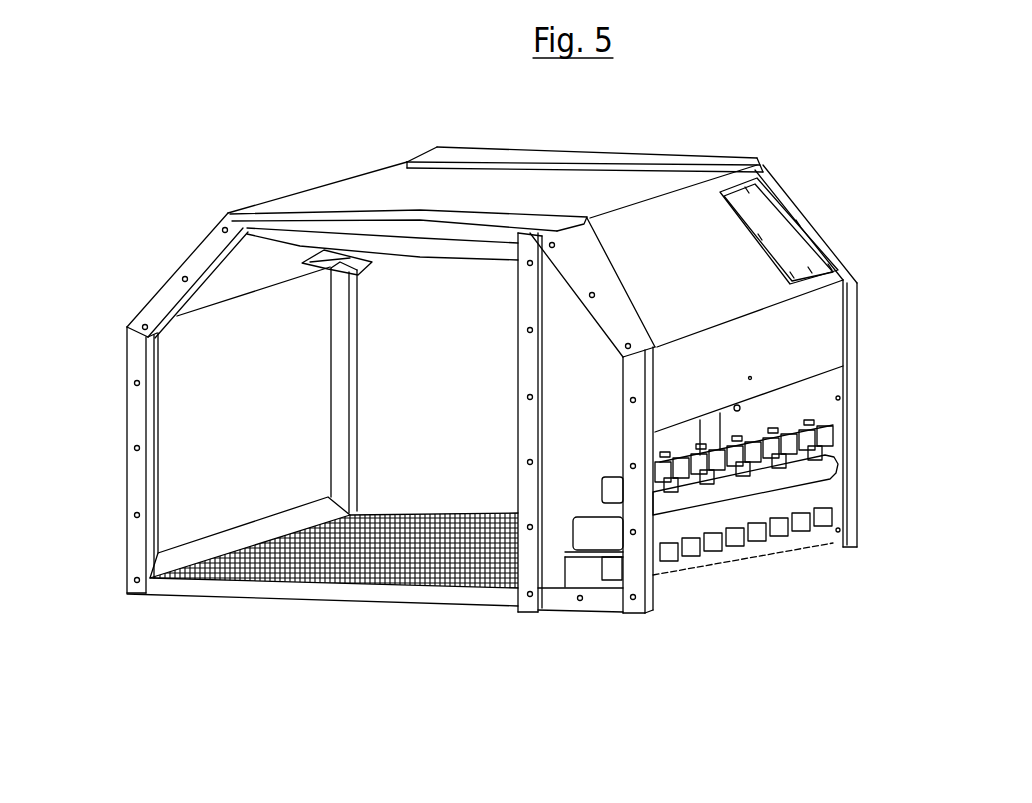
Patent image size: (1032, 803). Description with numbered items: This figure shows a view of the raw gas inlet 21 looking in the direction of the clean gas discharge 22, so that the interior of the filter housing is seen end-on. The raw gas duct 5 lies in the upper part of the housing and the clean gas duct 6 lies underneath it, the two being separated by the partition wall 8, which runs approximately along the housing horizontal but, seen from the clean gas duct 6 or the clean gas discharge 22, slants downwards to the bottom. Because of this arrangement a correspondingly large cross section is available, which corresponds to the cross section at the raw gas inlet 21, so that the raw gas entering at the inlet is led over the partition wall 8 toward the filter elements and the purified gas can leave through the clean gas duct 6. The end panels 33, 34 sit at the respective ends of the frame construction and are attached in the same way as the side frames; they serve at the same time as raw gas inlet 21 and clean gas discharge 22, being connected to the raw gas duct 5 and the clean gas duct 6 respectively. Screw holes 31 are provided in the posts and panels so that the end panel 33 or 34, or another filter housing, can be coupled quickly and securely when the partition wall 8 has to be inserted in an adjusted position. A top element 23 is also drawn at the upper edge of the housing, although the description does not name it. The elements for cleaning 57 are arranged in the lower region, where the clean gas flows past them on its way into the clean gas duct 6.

The raw gas duct 5 is at (447, 390).
The clean gas duct 6 is at (807, 402).
The partition wall 8 is at (437, 253).
The raw gas inlet 21 is at (437, 452).
The clean gas discharge 22 is at (590, 465).
The top plate 23 is at (587, 195).
The screw holes 31 is at (137, 515).
The end panel 33 is at (138, 413).
The end panel 34 is at (907, 513).
The elements for cleaning 57 is at (733, 507).